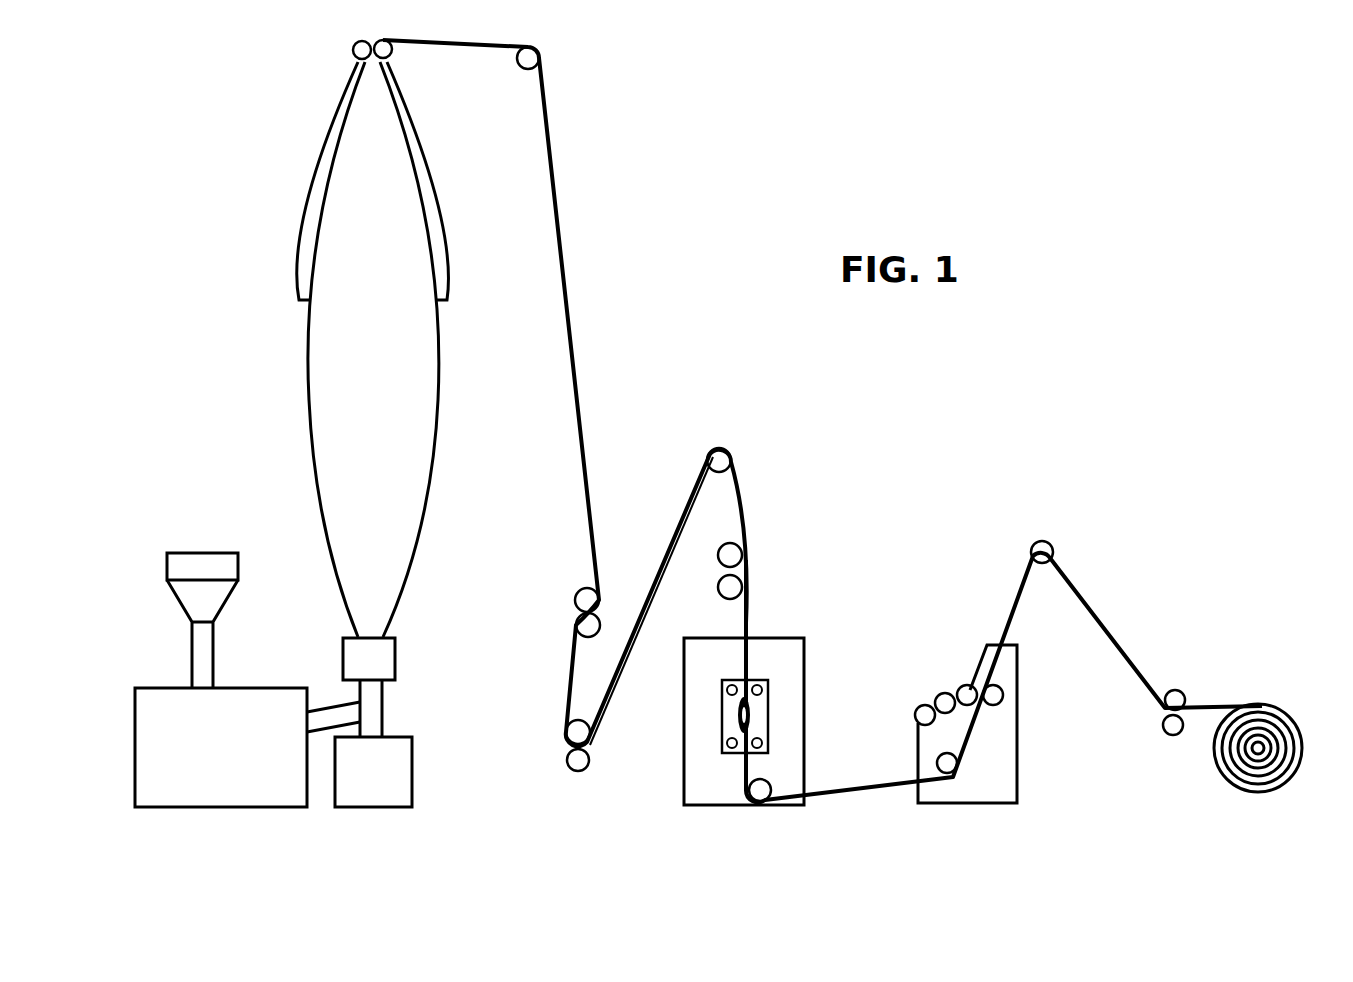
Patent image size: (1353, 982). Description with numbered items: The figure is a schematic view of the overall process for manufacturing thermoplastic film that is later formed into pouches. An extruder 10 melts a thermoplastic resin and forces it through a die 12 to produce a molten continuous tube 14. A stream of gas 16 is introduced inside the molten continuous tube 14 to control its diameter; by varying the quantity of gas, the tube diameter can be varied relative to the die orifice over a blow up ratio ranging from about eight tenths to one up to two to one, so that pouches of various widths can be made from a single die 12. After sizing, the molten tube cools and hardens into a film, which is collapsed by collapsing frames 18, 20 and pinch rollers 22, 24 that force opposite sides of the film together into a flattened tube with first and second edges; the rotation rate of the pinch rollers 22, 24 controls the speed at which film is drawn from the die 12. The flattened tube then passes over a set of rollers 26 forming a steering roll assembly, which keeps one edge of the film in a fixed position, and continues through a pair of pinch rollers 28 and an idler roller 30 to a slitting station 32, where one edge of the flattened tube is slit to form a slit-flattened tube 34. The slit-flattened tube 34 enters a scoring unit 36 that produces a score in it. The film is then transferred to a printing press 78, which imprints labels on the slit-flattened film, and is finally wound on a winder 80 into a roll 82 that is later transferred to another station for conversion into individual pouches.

The extruder 10 is at (218, 768).
The die 12 is at (382, 672).
The molten continuous tube 14 is at (309, 404).
The stream of gas 16 is at (380, 378).
The collapsing frame 18 is at (309, 190).
The collapsing frame 20 is at (438, 183).
The pinch roller 22 is at (353, 49).
The pinch roller 24 is at (392, 52).
The steering roll assembly 26 is at (578, 600).
The pinch rollers 28 is at (572, 758).
The idler roller 30 is at (716, 462).
The slitting station 32 is at (778, 638).
The slit-flattened tube 34 is at (742, 622).
The scoring unit 36 is at (752, 716).
The printing press 78 is at (1012, 705).
The winder 80 is at (1262, 745).
The roll 82 is at (1301, 740).